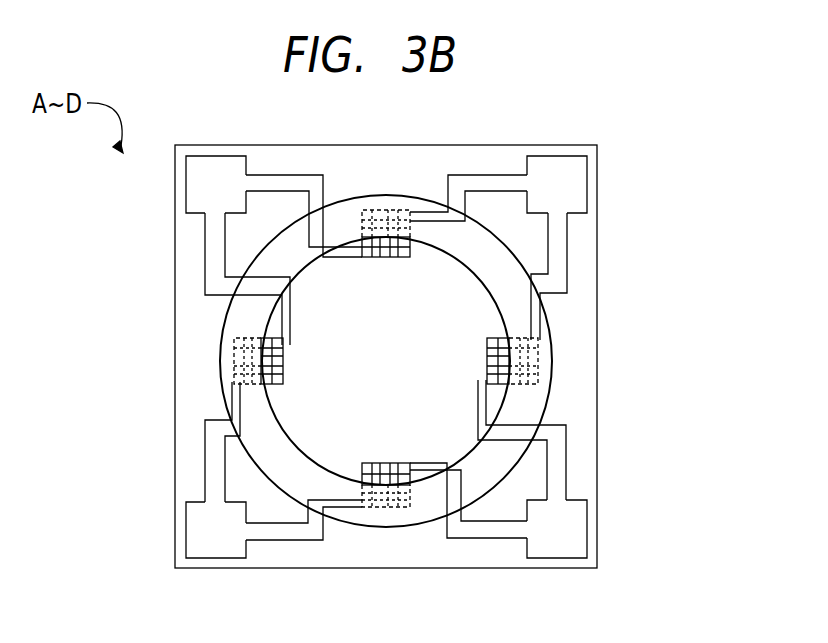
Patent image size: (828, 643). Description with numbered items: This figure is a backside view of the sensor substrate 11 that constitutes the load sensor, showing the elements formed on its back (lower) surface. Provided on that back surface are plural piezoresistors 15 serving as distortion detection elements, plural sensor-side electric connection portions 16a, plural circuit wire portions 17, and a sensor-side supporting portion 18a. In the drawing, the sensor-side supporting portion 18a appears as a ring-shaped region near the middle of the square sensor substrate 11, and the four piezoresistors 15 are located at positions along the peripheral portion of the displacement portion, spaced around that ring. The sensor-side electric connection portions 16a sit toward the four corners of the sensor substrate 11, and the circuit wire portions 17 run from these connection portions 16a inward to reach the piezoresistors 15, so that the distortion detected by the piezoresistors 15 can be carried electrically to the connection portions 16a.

The sensor substrate 11 is at (580, 317).
The piezoresistor 15 is at (385, 188).
The sensor-side electric connection portion 16a is at (219, 184).
The circuit wire portion 17 is at (288, 184).
The sensor-side supporting portion 18a is at (483, 258).